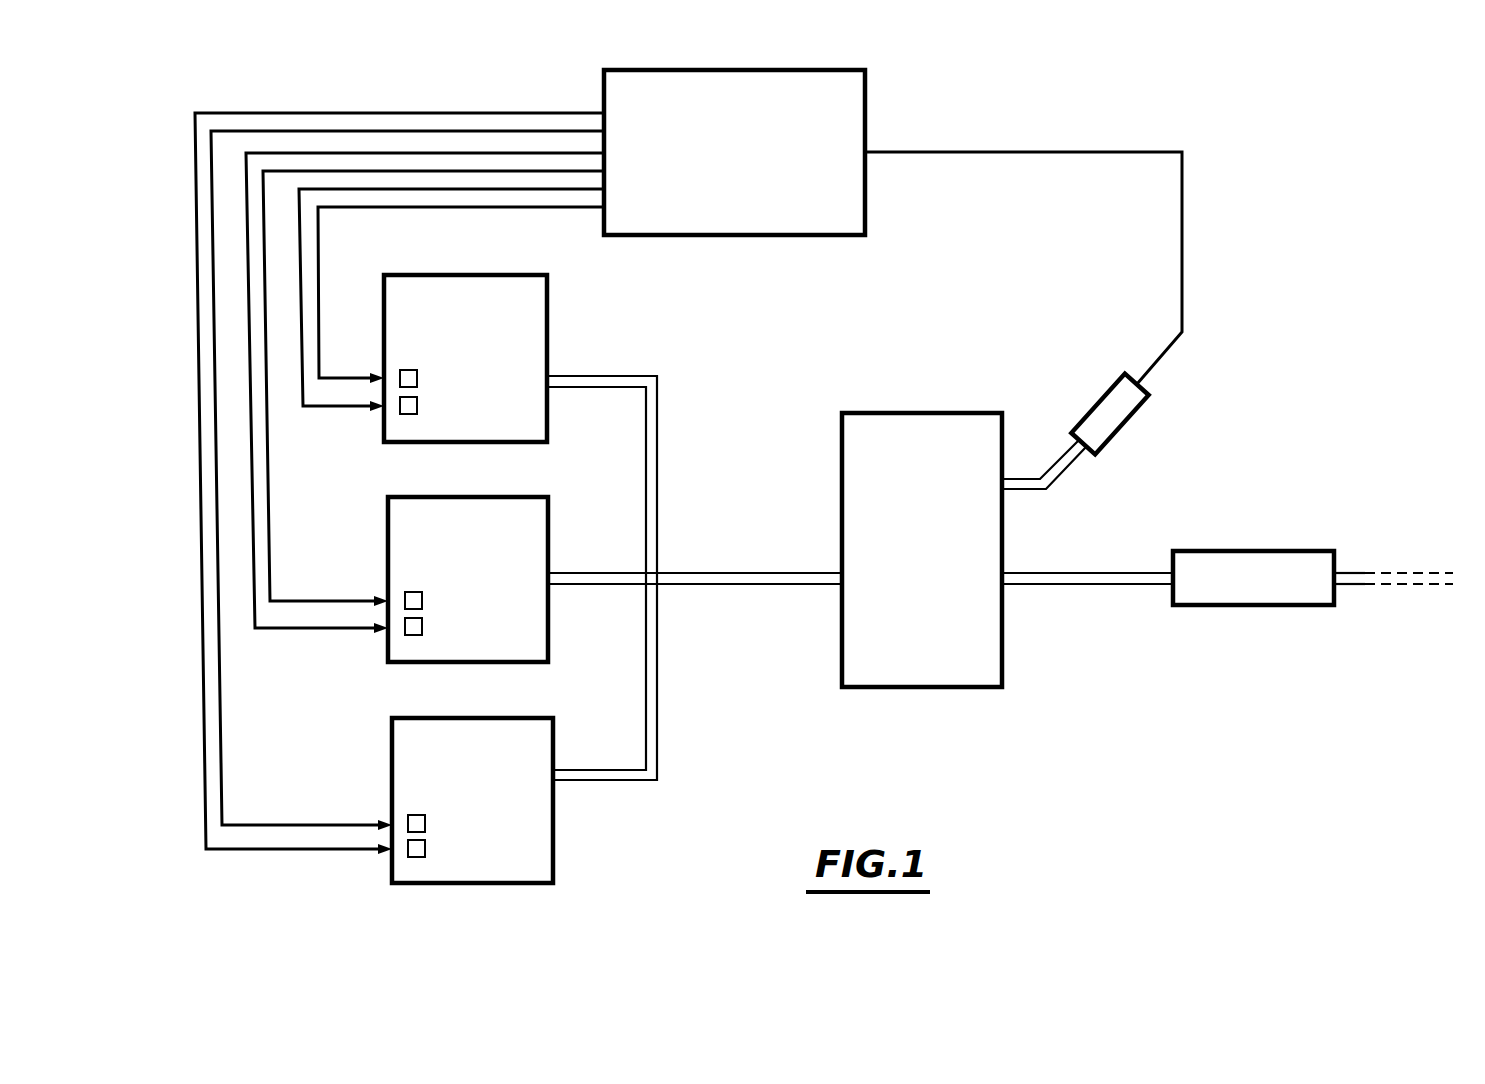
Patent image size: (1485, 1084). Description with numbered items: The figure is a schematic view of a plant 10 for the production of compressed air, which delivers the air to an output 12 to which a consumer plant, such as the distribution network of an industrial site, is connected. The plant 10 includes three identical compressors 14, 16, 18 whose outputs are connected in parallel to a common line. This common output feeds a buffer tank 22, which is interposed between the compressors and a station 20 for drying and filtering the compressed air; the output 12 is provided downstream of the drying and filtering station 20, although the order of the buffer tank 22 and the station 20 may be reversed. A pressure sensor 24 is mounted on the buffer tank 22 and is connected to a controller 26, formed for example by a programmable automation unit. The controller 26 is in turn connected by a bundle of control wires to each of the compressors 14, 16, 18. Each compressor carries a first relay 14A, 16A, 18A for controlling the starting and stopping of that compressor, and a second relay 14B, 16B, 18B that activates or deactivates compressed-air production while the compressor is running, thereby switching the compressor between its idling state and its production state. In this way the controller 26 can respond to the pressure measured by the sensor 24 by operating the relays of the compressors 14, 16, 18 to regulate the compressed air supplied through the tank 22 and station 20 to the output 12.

The plant 10 is at (1250, 283).
The output 12 is at (1362, 599).
The compressor 14 is at (465, 358).
The first relay 14A is at (417, 378).
The second relay 14B is at (417, 405).
The compressor 16 is at (468, 579).
The first relay 16A is at (422, 600).
The second relay 16B is at (422, 627).
The compressor 18 is at (472, 800).
The first relay 18A is at (425, 823).
The second relay 18B is at (425, 848).
The drying and filtering station 20 is at (1253, 578).
The buffer tank 22 is at (922, 550).
The pressure sensor 24 is at (1110, 407).
The controller 26 is at (734, 152).